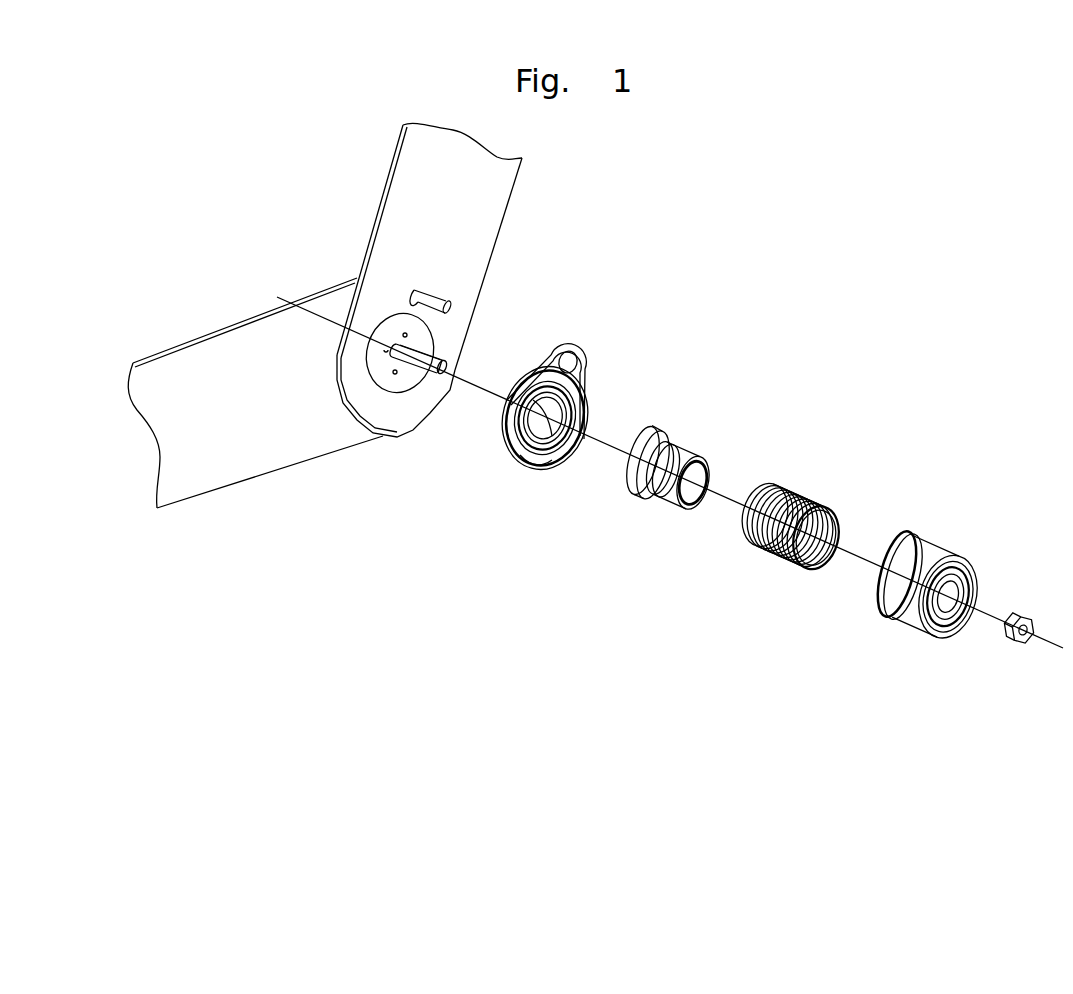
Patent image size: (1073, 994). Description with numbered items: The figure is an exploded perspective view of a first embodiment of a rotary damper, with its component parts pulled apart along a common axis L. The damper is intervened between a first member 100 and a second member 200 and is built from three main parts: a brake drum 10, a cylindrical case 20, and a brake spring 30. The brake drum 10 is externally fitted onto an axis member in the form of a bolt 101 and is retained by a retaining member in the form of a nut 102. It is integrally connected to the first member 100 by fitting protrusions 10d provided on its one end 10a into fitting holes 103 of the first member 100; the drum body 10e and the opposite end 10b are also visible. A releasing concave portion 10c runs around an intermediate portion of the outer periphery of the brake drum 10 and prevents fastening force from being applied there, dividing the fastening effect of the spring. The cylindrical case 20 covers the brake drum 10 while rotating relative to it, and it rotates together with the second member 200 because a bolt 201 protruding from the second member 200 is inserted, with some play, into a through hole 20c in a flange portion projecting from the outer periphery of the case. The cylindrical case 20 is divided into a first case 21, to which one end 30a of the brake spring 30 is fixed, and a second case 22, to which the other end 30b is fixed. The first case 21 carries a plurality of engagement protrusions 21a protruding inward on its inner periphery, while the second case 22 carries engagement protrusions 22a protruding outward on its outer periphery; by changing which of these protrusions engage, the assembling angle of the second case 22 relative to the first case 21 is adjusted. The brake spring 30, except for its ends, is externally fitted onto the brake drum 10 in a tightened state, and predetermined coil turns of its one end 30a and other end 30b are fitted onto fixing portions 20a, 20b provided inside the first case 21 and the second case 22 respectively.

The brake drum 10 is at (699, 459).
The one end of brake drum 10a is at (627, 474).
The opening of bushing 10b is at (695, 508).
The releasing concave portion 10c is at (660, 450).
The fitting protrusions 10d is at (632, 455).
The end portion of bushing 10e is at (712, 478).
The cylindrical case 20 is at (645, 625).
The fixing portion 20a is at (535, 462).
The fixing portion 20b is at (957, 592).
The through hole 20c is at (582, 359).
The first case 21 is at (564, 448).
The engagement protrusions 21a is at (547, 380).
The second case 22 is at (822, 561).
The engagement protrusions 22a is at (913, 547).
The brake spring 30 is at (804, 514).
The one end of brake spring 30a is at (768, 559).
The other end of brake spring 30b is at (807, 573).
The first member 100 is at (210, 337).
The axis member (bolt) 101 is at (441, 377).
The retaining member (nut) 102 is at (1013, 643).
The fitting holes 103 is at (396, 374).
The second member 200 is at (392, 164).
The axis member (bolt) 201 is at (432, 298).
The axis line L is at (993, 613).